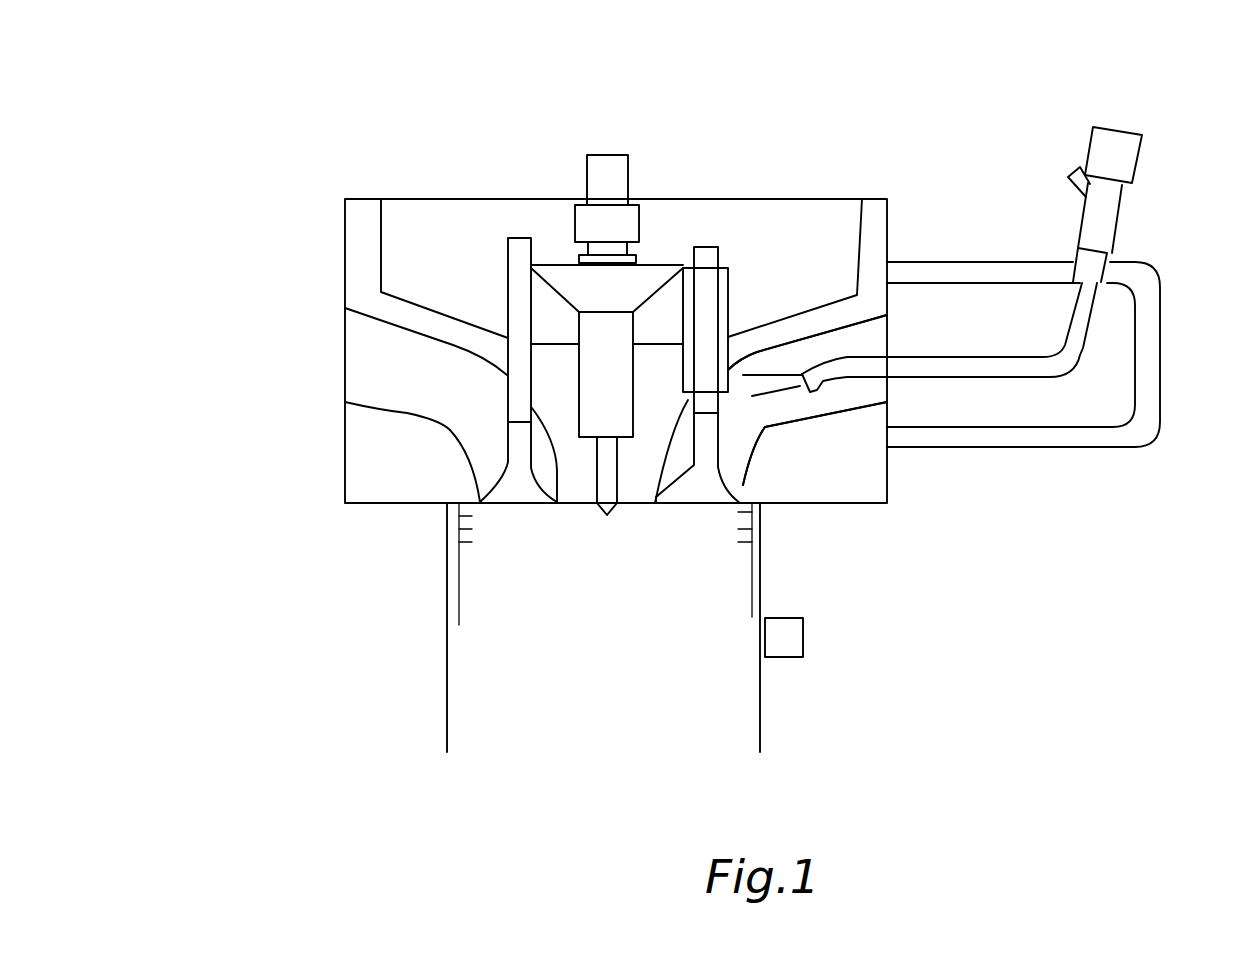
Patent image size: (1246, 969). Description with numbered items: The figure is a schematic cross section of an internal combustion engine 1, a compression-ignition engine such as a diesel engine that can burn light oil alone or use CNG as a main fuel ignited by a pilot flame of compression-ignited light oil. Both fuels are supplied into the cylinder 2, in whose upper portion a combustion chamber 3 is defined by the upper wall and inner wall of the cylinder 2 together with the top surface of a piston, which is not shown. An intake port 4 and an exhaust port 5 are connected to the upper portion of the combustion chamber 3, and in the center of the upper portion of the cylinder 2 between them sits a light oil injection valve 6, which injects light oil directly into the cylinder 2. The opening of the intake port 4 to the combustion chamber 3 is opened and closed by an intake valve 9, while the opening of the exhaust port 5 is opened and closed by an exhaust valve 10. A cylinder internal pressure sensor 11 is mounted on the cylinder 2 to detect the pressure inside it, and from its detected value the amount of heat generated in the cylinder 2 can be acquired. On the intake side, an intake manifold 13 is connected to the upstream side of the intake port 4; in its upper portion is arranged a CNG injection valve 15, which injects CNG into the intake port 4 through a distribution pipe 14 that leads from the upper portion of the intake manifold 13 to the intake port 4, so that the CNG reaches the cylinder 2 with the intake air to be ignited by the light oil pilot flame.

The internal combustion engine 1 is at (333, 188).
The cylinder 2 is at (447, 690).
The combustion chamber 3 is at (515, 562).
The intake port 4 is at (762, 455).
The exhaust port 5 is at (403, 417).
The light oil injection valve 6 is at (621, 468).
The intake valve 9 is at (732, 307).
The exhaust valve 10 is at (503, 292).
The cylinder internal pressure sensor 11 is at (788, 657).
The intake manifold 13 is at (948, 445).
The distribution pipe 14 is at (940, 355).
The CNG injection valve 15 is at (1123, 230).